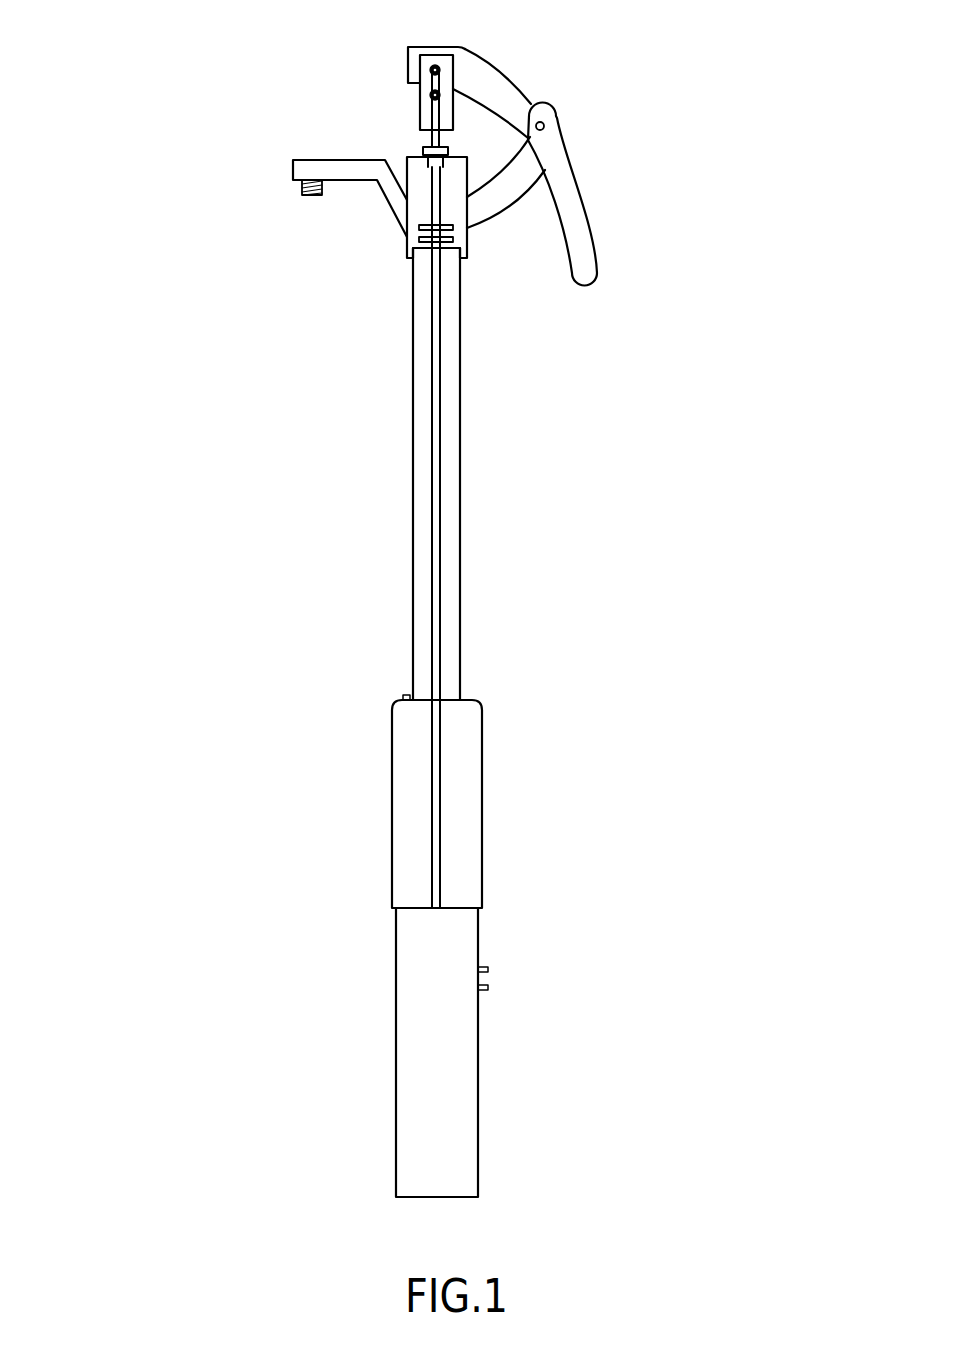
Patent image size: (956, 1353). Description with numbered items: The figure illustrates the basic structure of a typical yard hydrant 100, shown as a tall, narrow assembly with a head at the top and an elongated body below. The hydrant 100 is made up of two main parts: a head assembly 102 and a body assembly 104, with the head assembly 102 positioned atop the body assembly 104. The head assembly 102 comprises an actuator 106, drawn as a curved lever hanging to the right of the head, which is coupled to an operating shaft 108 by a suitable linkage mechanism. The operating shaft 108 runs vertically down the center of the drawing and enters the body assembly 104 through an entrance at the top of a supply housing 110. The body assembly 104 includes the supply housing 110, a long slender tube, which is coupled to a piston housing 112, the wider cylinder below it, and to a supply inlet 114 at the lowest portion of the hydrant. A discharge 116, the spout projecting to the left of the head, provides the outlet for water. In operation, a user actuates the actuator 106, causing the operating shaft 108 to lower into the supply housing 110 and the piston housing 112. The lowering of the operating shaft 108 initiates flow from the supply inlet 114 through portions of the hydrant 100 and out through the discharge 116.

The yard hydrant 100 is at (182, 68).
The head assembly 102 is at (650, 95).
The body assembly 104 is at (668, 389).
The actuator 106 is at (576, 197).
The operating shaft 108 is at (437, 355).
The supply housing 110 is at (460, 308).
The piston housing 112 is at (468, 822).
The supply inlet 114 is at (498, 975).
The discharge 116 is at (295, 213).